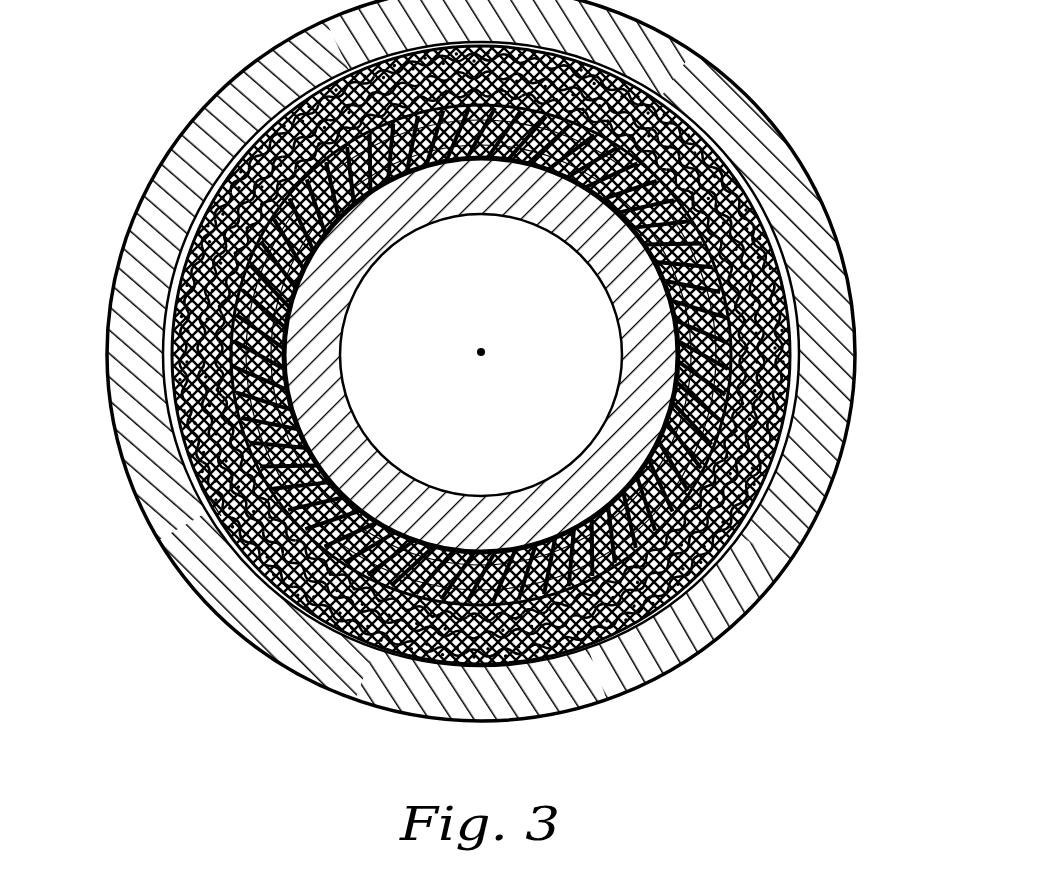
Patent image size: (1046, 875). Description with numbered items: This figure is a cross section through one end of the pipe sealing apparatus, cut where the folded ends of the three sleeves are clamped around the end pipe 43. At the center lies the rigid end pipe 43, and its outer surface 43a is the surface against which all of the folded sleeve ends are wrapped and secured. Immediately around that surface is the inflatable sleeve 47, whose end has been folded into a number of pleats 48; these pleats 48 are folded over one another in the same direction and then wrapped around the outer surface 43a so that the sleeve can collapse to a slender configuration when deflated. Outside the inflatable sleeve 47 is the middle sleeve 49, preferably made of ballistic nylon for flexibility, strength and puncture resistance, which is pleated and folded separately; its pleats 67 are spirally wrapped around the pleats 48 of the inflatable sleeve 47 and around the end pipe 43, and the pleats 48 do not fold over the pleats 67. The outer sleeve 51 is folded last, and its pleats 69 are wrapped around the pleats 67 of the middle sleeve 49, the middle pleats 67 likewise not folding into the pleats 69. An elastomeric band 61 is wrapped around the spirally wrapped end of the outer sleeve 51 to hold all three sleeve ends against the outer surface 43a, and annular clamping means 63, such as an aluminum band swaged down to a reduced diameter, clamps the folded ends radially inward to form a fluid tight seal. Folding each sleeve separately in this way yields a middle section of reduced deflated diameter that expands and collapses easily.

The end pipe 43 is at (527, 496).
The outer surface of the end pipe 43a is at (660, 430).
The inflatable sleeve 47 is at (650, 242).
The pleats of the inflatable sleeve 48 is at (378, 163).
The middle sleeve 49 is at (690, 222).
The outer sleeve 51 is at (645, 245).
The elastomeric band 61 is at (793, 313).
The annular clamping means 63 is at (753, 572).
The pleats of the middle sleeve 67 is at (705, 442).
The pleats of the outer sleeve 69 is at (243, 535).